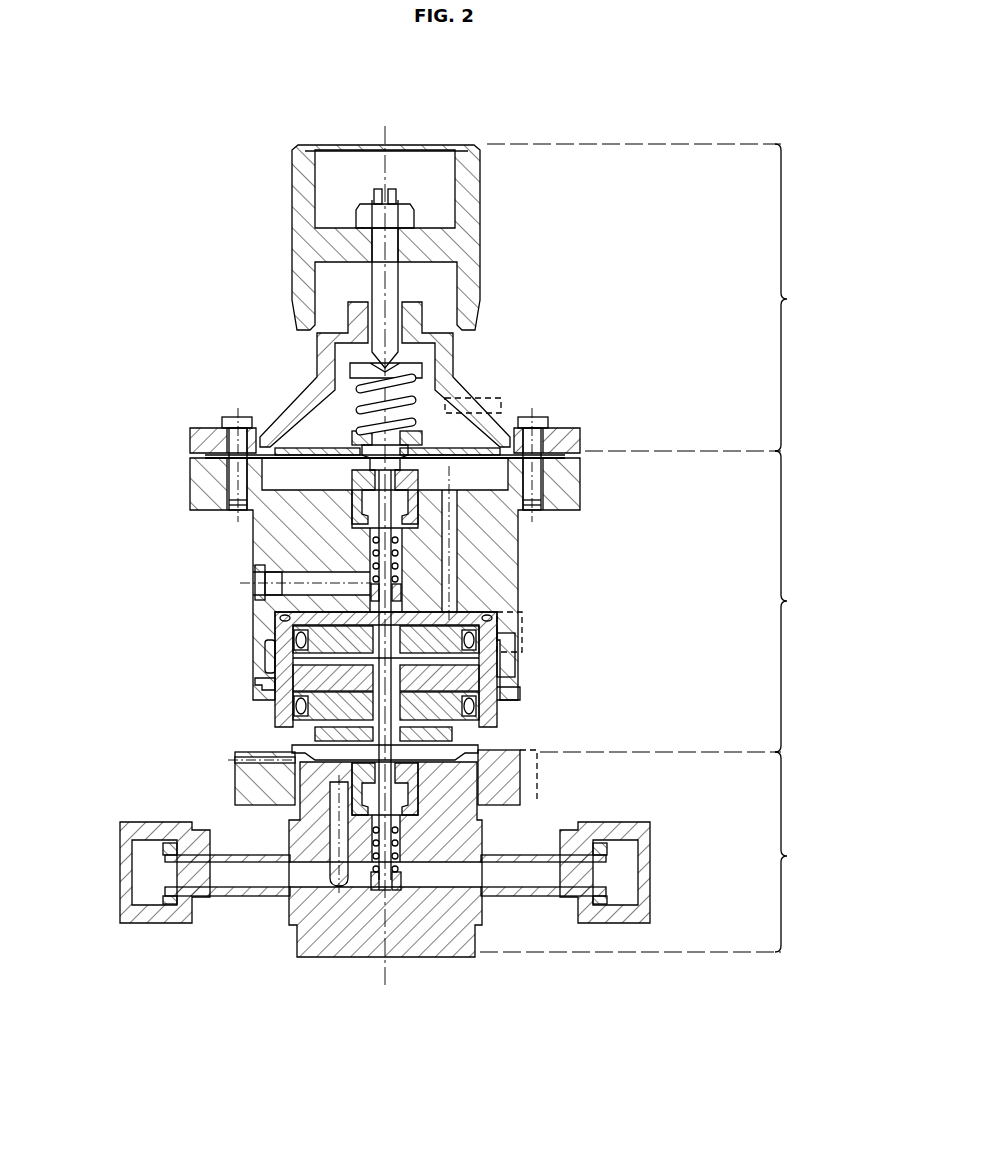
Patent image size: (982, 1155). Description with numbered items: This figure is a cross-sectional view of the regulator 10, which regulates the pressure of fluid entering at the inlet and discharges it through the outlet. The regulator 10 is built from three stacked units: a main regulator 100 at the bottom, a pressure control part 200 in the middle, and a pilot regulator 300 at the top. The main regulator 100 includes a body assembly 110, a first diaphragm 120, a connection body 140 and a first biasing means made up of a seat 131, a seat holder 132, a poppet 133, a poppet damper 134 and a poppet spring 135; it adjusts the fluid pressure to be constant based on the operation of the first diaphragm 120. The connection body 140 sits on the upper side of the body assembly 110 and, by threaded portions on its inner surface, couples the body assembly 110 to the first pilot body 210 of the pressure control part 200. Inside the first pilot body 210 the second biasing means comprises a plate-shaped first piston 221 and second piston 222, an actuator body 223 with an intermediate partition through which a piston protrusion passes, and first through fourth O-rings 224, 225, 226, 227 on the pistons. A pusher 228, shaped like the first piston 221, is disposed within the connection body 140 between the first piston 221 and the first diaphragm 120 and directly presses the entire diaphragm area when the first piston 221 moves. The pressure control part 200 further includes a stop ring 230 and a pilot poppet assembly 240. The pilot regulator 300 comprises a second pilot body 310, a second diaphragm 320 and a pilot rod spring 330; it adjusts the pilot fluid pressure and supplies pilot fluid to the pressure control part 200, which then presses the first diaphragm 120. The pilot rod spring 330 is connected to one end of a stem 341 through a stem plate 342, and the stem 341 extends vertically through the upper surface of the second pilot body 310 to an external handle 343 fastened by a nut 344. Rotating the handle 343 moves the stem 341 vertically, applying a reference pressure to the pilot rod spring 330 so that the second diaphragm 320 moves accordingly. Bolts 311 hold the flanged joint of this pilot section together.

The regulator 10 is at (518, 129).
The main regulator 100 is at (802, 852).
The body assembly 110 is at (318, 948).
The first diaphragm 120 is at (244, 790).
The seat 131 is at (362, 815).
The seat holder 132 is at (320, 850).
The poppet 133 is at (396, 855).
The poppet damper 134 is at (478, 925).
The poppet spring 135 is at (483, 904).
The connection body 140 is at (292, 758).
The pressure control part 200 is at (802, 601).
The first pilot body 210 is at (277, 522).
The first piston 221 is at (470, 712).
The second piston 222 is at (500, 619).
The actuator body 223 is at (292, 628).
The first O-ring 224 is at (470, 688).
The second O-ring 225 is at (512, 641).
The third O-ring 226 is at (495, 616).
The fourth O-ring 227 is at (298, 665).
The pusher 228 is at (316, 735).
The stop ring 230 is at (512, 752).
The pilot poppet assembly 240 is at (400, 541).
The pilot regulator 300 is at (802, 297).
The second pilot body 310 is at (327, 362).
The bolt 311 is at (223, 418).
The second diaphragm 320 is at (556, 447).
The pilot rod spring 330 is at (540, 426).
The stem 341 is at (388, 318).
The stem plate 342 is at (412, 368).
The external handle 343 is at (332, 243).
The nut 344 is at (358, 213).